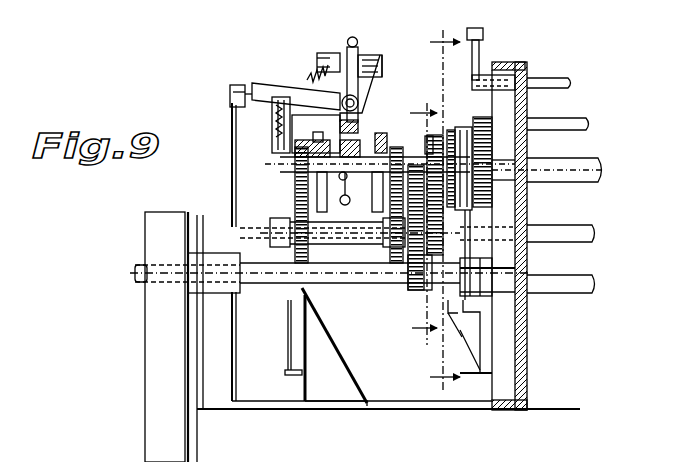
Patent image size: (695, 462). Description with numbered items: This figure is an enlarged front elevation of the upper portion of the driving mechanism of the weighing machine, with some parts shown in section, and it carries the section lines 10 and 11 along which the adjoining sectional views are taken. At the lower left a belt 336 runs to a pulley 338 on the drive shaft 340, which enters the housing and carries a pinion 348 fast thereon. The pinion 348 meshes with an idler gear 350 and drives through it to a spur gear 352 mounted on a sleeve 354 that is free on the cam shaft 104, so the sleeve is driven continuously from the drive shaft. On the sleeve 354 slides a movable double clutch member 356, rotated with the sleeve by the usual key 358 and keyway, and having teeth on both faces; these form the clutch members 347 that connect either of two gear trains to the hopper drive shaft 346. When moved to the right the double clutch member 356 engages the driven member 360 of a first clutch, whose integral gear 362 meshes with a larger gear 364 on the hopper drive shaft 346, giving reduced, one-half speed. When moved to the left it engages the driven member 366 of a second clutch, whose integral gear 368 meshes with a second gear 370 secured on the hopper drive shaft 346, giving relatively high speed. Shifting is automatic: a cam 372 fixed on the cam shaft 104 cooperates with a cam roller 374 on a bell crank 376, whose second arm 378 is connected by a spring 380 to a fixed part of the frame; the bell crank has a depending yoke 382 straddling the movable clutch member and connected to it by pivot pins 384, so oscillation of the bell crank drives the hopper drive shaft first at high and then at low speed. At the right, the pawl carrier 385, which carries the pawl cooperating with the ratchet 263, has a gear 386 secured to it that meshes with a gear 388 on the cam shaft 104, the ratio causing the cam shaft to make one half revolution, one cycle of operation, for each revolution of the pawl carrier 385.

The section line 10- 10 is at (444, 210).
The section line 11- 11 is at (419, 222).
The cam shaft 104 is at (596, 156).
The ratchet 263 is at (520, 213).
The belt 336 is at (150, 415).
The pulley 338 is at (145, 313).
The drive shaft 340 is at (405, 287).
The hopper drive shaft 346 is at (583, 224).
The clutch members 347 is at (338, 108).
The pinion 348 is at (402, 290).
The idler gear 350 is at (480, 303).
The spur gear 352 is at (512, 70).
The sleeve 354 is at (292, 148).
The double clutch member 356 is at (330, 250).
The key 358 is at (268, 220).
The driven member 360 is at (405, 240).
The gear 362 is at (483, 88).
The larger gear 364 is at (408, 282).
The driven member 366 is at (306, 265).
The gear 368 is at (300, 100).
The second gear 370 is at (312, 262).
The cam 372 is at (232, 205).
The cam roller 374 is at (237, 92).
The bell crank 376 is at (328, 128).
The second arm 378 is at (392, 48).
The spring 380 is at (315, 75).
The yoke 382 is at (362, 112).
The pivot pins 384 is at (351, 204).
The pawl carrier 385 is at (527, 80).
The gear 386 is at (494, 150).
The gear 388 is at (527, 115).